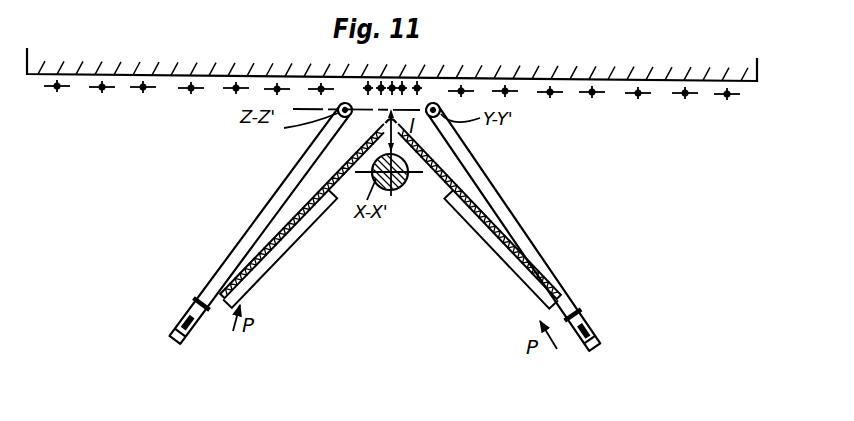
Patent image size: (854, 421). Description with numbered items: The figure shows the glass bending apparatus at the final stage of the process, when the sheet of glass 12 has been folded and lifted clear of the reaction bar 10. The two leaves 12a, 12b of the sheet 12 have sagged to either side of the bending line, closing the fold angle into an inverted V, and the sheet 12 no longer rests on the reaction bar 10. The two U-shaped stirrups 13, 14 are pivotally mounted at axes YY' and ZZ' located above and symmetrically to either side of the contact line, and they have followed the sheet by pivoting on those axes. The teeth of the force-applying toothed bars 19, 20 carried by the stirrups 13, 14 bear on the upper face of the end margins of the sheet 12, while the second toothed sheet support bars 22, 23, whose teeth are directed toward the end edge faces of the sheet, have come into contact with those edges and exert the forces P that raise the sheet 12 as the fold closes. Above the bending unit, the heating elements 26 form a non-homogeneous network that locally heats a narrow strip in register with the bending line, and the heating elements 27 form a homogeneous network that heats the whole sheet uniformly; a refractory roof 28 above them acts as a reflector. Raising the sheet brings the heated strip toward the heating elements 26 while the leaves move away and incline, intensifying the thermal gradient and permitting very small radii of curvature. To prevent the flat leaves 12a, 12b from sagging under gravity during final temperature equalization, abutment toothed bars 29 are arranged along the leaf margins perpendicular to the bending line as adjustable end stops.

The reaction bar 10 is at (393, 192).
The sheet of glass 12 is at (390, 209).
The leaf of the sheet 12a is at (337, 189).
The leaf of the sheet 12b is at (440, 190).
The stirrup 13 is at (519, 221).
The stirrup 14 is at (263, 204).
The toothed bar 19 is at (588, 305).
The toothed bar 20 is at (195, 292).
The sheet support bar 22 is at (594, 331).
The sheet support bar 23 is at (190, 325).
The heating elements 26 is at (417, 84).
The heating elements 27 is at (638, 97).
The refractory roof 28 is at (622, 80).
The toothed bars 29 is at (262, 272).